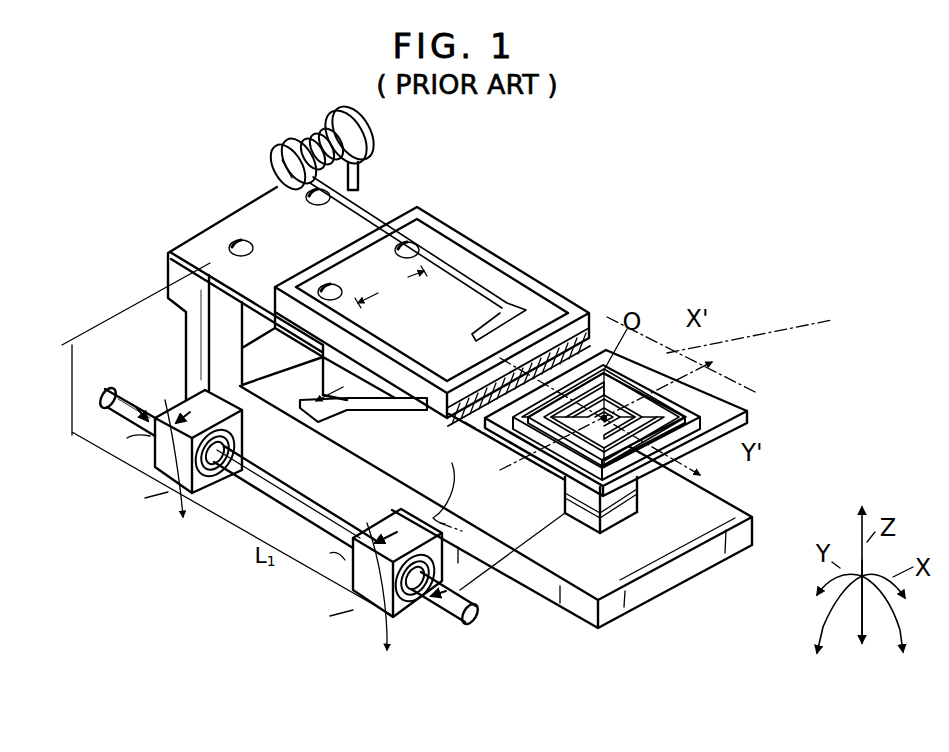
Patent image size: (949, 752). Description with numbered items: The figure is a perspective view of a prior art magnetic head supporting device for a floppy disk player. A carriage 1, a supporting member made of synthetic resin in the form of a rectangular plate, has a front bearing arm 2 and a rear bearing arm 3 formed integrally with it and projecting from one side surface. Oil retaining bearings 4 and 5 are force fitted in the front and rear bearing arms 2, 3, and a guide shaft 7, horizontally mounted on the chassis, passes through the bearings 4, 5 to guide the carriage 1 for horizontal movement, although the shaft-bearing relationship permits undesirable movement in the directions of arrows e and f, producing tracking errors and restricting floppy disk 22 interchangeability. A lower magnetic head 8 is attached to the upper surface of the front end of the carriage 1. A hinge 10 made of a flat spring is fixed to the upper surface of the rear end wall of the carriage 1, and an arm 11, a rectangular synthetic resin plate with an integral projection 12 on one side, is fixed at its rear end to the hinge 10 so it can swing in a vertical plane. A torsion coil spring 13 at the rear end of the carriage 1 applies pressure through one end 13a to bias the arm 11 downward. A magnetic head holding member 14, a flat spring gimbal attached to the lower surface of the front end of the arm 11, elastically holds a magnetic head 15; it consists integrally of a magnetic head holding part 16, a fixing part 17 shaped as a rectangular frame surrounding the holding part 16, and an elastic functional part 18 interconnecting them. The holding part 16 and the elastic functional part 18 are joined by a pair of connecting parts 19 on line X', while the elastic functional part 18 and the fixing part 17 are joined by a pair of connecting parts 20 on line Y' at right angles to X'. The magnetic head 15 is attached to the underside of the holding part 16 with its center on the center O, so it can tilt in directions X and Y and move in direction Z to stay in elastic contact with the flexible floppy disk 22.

The carriage 1 is at (553, 590).
The front bearing arm 2 is at (358, 553).
The rear bearing arm 3 is at (163, 420).
The oil retaining bearing 4 is at (411, 600).
The oil retaining bearing 5 is at (219, 430).
The guide shaft 7 is at (280, 506).
The lower magnetic head 8 is at (615, 523).
The hinge 10 is at (258, 213).
The arm 11 is at (533, 333).
The projection 12 is at (307, 417).
The torsion coil spring 13 is at (318, 130).
The end of torsion coil spring 13a is at (473, 340).
The magnetic head holding member 14 is at (668, 415).
The magnetic head 15 is at (640, 507).
The magnetic head holding part 16 is at (563, 480).
The fixing part 17 is at (566, 352).
The elastic functional part 18 is at (749, 408).
The connecting parts 19 is at (548, 395).
The connecting parts 20 is at (641, 390).
The floppy disk 22 is at (440, 454).